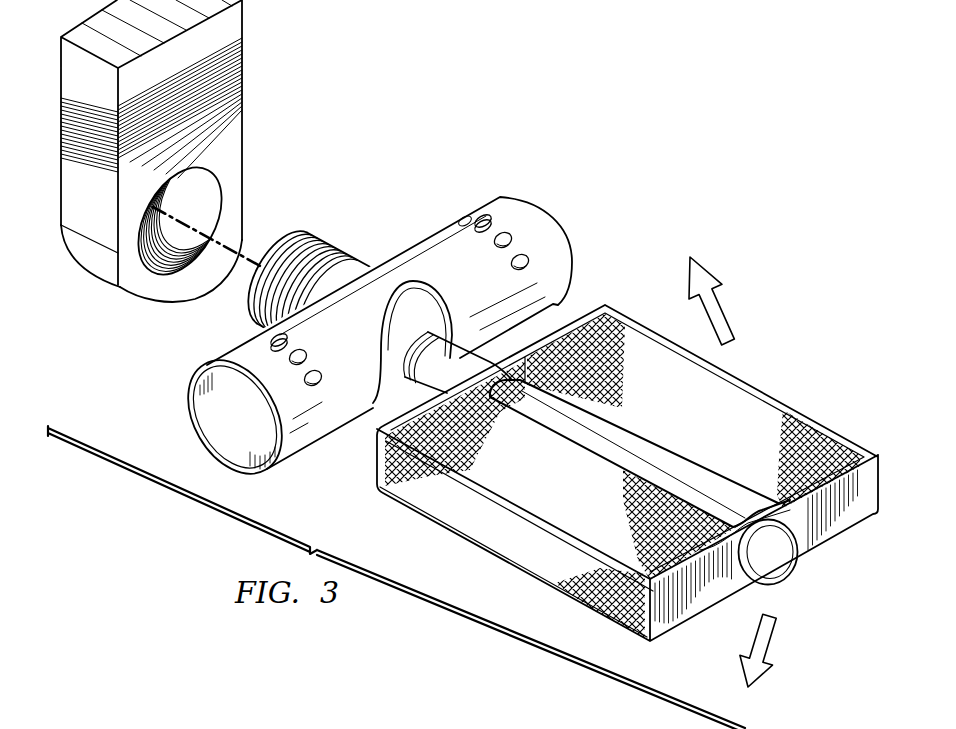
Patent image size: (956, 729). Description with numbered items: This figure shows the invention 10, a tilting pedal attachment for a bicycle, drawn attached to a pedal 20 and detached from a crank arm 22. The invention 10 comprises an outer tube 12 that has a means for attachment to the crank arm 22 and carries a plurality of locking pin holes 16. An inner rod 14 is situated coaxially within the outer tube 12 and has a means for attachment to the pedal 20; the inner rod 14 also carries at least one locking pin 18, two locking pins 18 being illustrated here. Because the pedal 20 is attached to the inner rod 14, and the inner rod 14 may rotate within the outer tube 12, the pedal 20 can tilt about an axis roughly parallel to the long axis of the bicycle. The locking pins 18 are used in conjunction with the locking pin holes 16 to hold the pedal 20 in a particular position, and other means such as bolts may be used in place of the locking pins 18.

The invention 10 is at (521, 91).
The outer tube 12 is at (421, 241).
The inner rod 14 is at (204, 412).
The locking pin holes 16 is at (508, 232).
The locking pins 18 is at (480, 215).
The pedal 20 is at (763, 410).
The crank arm 22 is at (227, 138).